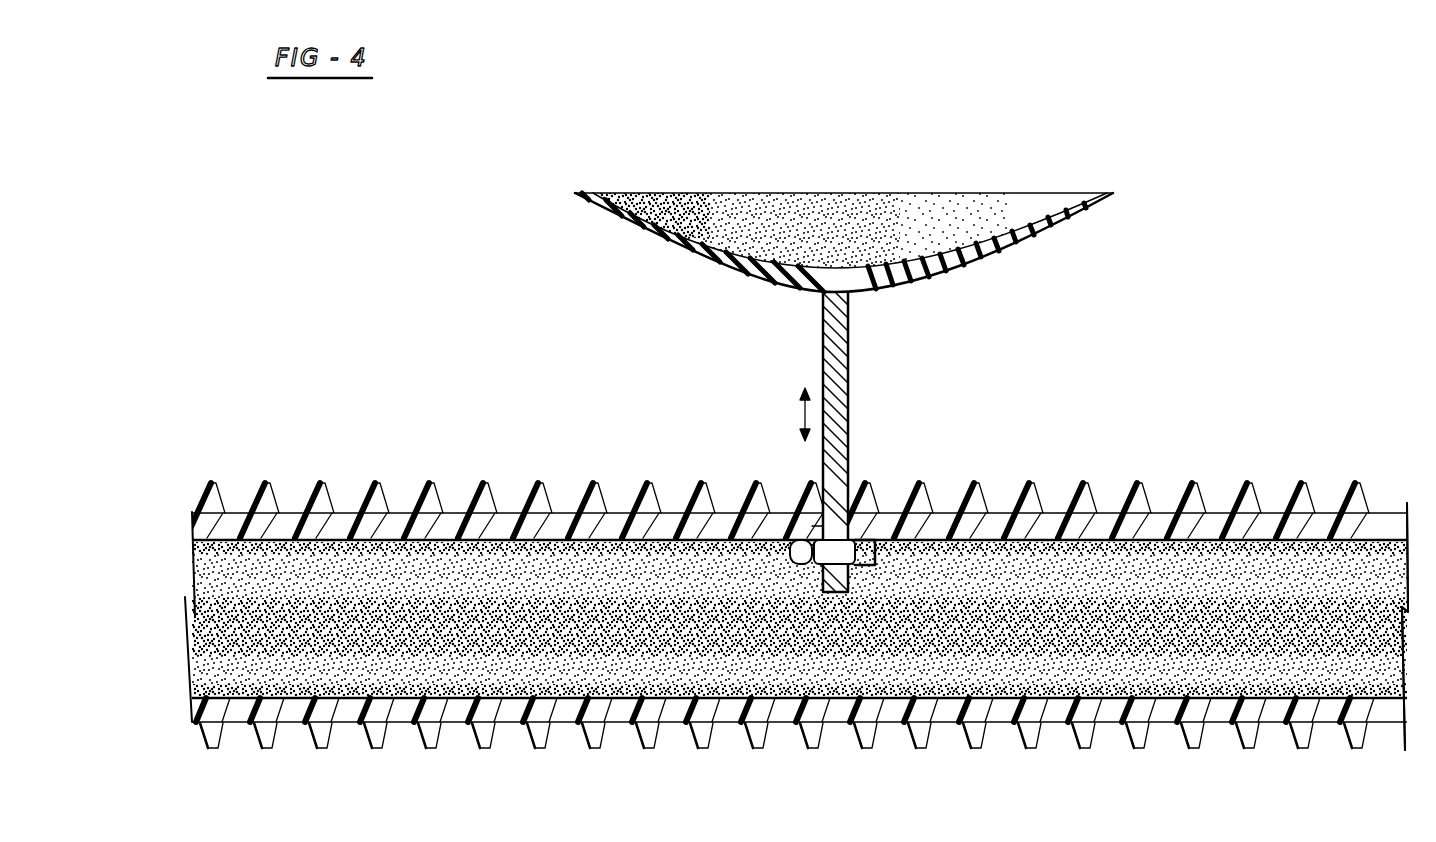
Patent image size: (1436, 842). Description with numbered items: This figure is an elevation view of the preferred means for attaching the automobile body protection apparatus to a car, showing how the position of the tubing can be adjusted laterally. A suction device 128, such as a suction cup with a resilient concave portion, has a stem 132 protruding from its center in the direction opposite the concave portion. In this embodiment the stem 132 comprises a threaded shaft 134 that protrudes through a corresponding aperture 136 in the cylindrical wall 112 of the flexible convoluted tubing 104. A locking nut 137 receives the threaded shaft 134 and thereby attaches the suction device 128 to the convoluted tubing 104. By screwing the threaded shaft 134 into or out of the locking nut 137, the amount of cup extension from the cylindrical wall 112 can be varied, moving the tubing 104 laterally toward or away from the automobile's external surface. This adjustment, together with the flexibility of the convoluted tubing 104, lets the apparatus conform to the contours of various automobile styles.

The flexible convoluted tubing 104 is at (1253, 482).
The cylindrical wall 112 is at (1406, 526).
The suction device 128 is at (1100, 185).
The stem 132 is at (860, 327).
The threaded shaft 134 is at (850, 460).
The aperture 136 is at (821, 526).
The locking nut 137 is at (870, 546).